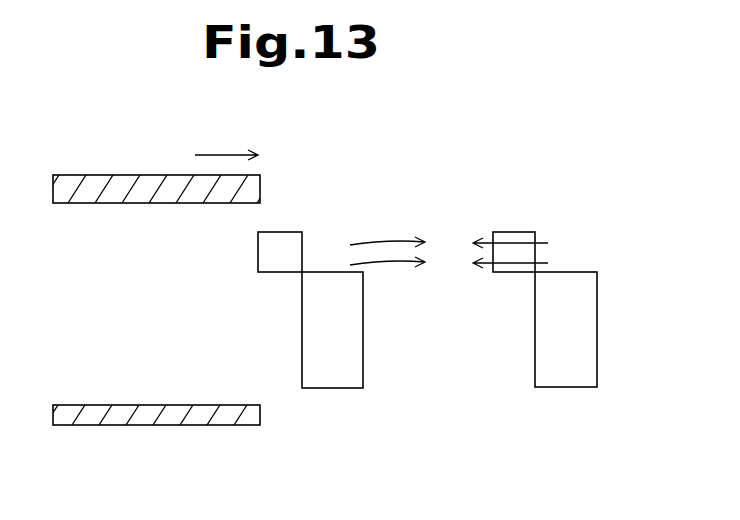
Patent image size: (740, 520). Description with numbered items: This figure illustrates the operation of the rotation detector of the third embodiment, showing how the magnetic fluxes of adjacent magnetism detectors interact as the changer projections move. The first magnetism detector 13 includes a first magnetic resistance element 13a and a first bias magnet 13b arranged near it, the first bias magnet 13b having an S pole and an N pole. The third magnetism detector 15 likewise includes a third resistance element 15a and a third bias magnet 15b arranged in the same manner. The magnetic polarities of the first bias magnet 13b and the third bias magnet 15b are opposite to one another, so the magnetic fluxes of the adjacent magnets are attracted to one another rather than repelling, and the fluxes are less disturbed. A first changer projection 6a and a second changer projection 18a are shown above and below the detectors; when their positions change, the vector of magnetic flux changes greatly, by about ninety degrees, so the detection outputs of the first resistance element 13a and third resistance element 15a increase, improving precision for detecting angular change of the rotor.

The first changer projection 6a is at (128, 176).
The second changer projection 18a is at (130, 426).
The third magnetism detector 15 is at (266, 310).
The third resistance element 15a is at (280, 273).
The third bias magnet 15b is at (308, 352).
The first magnetism detector 13 is at (500, 309).
The first magnetic resistance element 13a is at (517, 273).
The first bias magnet 13b is at (542, 353).